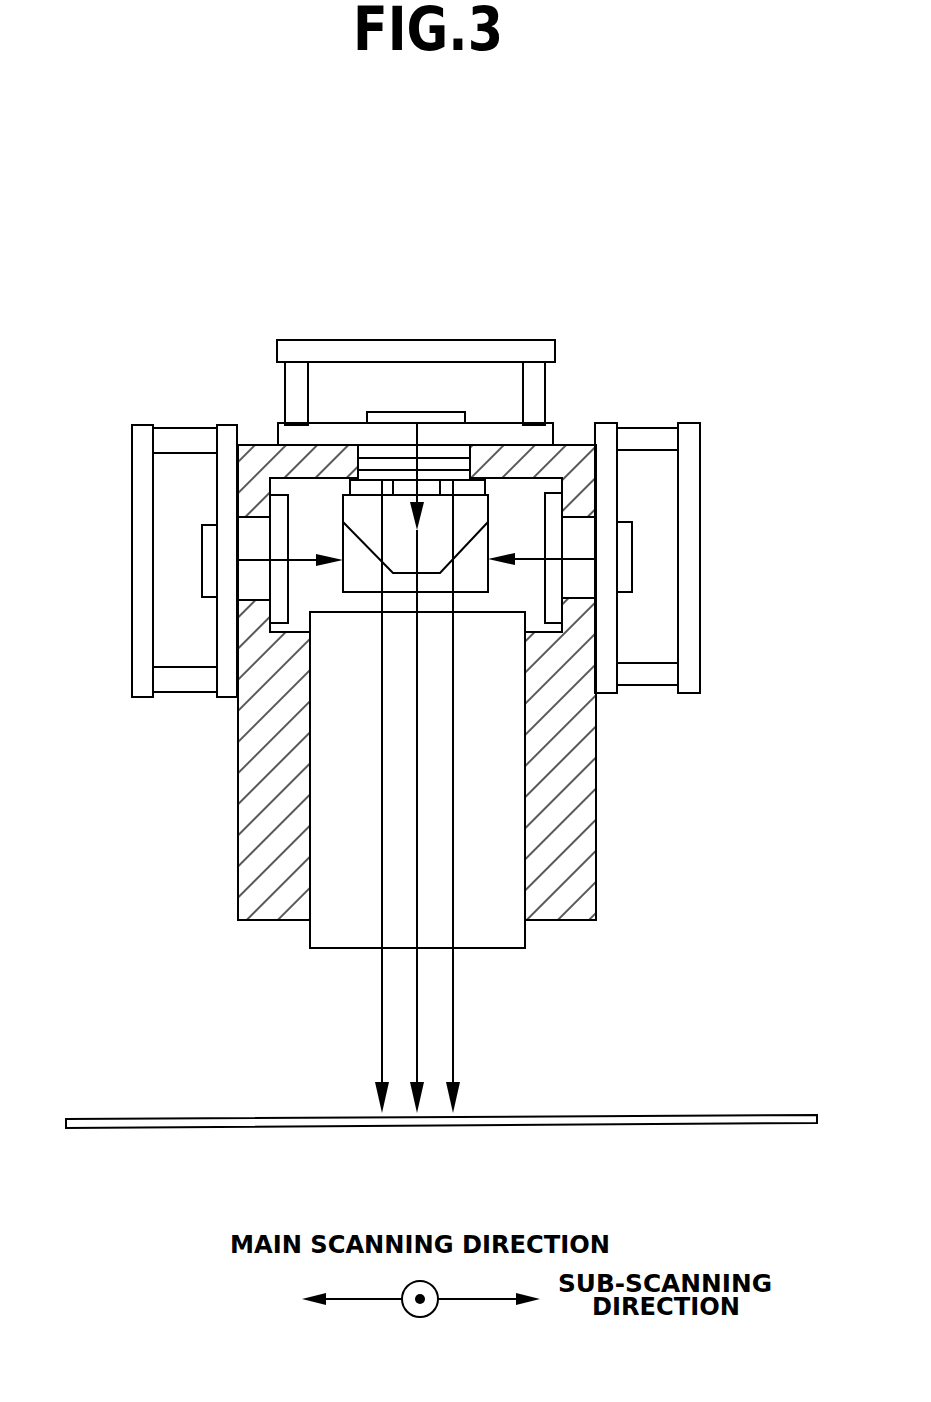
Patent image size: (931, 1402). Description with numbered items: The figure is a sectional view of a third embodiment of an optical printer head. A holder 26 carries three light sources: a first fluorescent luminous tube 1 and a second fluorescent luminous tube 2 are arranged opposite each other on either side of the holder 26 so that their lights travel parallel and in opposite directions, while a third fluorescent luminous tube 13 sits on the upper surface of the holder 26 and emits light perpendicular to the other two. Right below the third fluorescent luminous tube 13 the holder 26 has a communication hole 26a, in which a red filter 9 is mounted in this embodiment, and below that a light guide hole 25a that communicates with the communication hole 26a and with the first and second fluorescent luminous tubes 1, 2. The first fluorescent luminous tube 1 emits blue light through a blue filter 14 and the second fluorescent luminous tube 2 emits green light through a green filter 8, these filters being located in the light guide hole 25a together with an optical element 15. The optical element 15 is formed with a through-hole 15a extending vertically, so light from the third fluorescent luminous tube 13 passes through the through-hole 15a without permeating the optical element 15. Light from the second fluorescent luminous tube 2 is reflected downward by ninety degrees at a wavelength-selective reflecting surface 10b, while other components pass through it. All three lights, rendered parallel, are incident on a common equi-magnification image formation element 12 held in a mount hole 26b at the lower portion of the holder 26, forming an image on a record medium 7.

The first fluorescent luminous tube 1 is at (133, 547).
The second fluorescent luminous tube 2 is at (701, 573).
The record medium 7 is at (686, 1115).
The green filter 8 is at (552, 590).
The red filter 9 is at (453, 465).
The second reflecting surface 10b is at (470, 543).
The equi-magnification image formation element 12 is at (510, 727).
The third fluorescent luminous tube 13 is at (397, 350).
The blue filter 14 is at (277, 573).
The optical element 15 is at (467, 520).
The through-hole 15a is at (378, 515).
The light guide hole 25a is at (523, 493).
The holder 26 is at (426, 602).
The communication hole 26a is at (356, 472).
The mount hole 26b is at (527, 820).